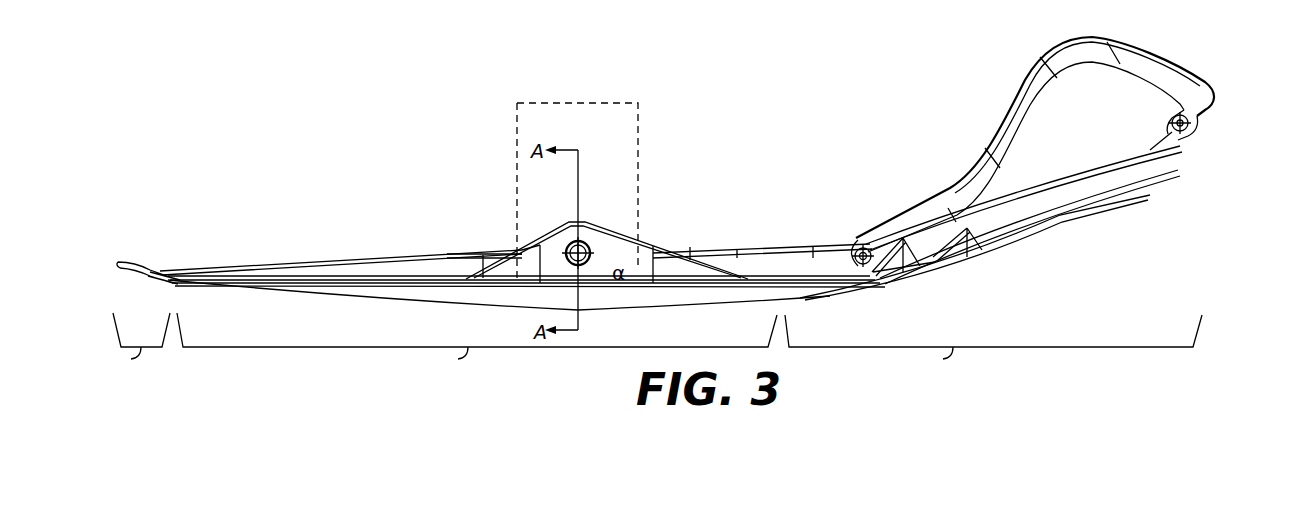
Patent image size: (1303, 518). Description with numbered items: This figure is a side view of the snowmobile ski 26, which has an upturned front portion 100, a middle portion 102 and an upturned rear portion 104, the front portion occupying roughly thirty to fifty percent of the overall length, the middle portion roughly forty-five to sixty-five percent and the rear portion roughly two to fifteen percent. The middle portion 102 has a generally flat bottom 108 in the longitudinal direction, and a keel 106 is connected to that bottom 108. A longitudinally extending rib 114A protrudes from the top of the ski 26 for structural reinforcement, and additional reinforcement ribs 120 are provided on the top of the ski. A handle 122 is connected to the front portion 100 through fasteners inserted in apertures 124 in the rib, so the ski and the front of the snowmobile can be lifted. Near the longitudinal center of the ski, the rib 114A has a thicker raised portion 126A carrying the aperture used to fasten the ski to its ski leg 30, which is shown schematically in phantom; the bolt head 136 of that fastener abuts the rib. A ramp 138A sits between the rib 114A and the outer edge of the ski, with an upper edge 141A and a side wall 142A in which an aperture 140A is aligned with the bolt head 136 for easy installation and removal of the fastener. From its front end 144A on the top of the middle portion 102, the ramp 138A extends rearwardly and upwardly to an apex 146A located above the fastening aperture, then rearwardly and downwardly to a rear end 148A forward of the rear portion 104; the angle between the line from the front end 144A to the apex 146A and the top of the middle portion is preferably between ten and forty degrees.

The ski 26 is at (368, 131).
The ski leg 30 is at (640, 116).
The front portion 100 is at (993, 283).
The middle portion 102 is at (477, 354).
The rear portion 104 is at (146, 329).
The keel 106 is at (610, 300).
The bottom 108 is at (463, 296).
The rib 114A is at (748, 258).
The reinforcement ribs 120 is at (930, 268).
The handle 122 is at (1115, 53).
The apertures 124 is at (868, 245).
The raised portion 126A is at (582, 238).
The bolt head 136 is at (530, 262).
The ramp 138A is at (505, 258).
The aperture 140A is at (620, 243).
The upper edge 141A is at (680, 258).
The side wall 142A is at (708, 256).
The front end 144A is at (790, 264).
The apex 146A is at (572, 222).
The rear end 148A is at (463, 278).